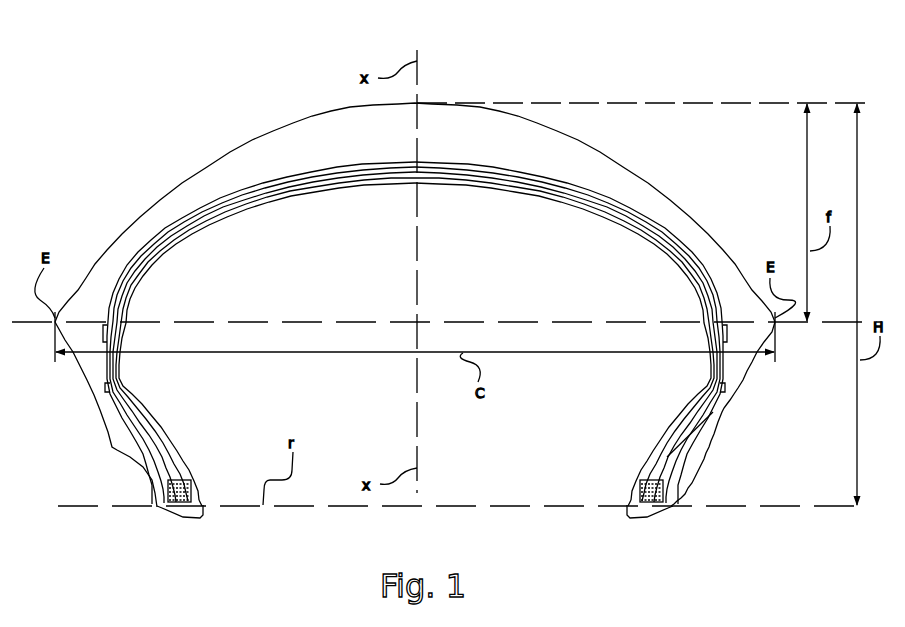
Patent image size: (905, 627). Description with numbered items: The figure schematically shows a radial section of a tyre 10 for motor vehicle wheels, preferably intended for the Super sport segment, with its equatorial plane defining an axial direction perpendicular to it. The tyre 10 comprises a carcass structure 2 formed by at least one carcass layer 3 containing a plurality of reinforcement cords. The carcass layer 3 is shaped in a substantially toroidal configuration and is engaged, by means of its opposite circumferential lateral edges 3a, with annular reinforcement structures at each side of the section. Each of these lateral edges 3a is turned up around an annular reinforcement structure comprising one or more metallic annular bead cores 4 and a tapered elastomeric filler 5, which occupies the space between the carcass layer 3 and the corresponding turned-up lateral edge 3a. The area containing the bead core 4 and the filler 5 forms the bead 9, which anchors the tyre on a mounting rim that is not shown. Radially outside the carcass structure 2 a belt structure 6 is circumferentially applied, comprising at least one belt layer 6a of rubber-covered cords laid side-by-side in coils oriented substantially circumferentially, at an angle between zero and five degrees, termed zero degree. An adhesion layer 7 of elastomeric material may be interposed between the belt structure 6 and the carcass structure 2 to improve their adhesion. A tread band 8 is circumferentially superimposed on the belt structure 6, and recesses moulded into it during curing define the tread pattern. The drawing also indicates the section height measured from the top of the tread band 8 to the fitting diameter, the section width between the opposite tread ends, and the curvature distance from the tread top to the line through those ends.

The carcass structure 2 is at (667, 428).
The carcass layer 3 is at (668, 453).
The lateral edges of the carcass layer 3a is at (713, 412).
The bead core 4 is at (640, 484).
The tapered elastomeric filler 5 is at (665, 458).
The belt structure 6 is at (607, 200).
The belt layer 6a is at (672, 257).
The adhesion layer 7 is at (620, 224).
The tread band 8 is at (543, 115).
The bead 9 is at (682, 470).
The tyre 10 is at (727, 192).